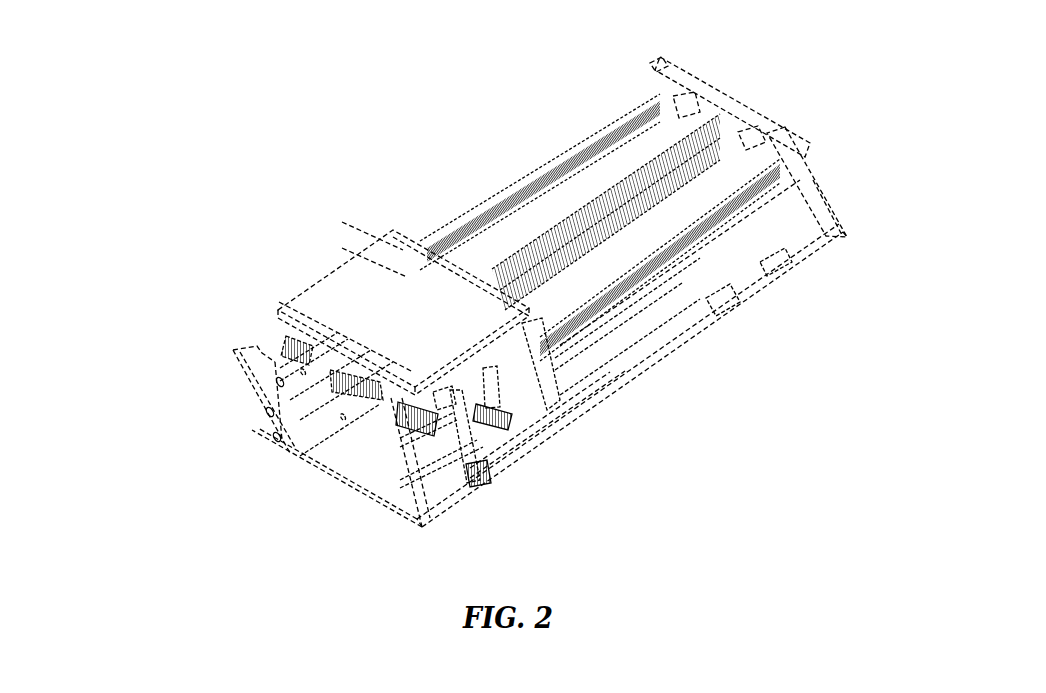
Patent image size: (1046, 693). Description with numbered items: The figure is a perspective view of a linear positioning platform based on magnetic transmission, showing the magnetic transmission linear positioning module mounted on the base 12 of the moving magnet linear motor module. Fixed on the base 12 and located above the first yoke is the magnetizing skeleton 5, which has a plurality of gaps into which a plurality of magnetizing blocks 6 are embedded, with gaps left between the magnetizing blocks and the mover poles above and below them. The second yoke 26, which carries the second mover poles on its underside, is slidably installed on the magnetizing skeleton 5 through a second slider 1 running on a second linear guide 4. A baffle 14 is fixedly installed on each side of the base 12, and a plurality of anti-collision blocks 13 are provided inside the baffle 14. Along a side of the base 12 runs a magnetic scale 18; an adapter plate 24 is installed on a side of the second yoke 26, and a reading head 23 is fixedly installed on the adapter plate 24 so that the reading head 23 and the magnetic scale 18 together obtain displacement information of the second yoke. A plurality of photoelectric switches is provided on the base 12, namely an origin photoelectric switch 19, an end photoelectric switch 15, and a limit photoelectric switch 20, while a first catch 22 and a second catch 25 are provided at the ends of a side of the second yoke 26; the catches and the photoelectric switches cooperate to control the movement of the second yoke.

The second slider 1 is at (237, 348).
The second linear guide 4 is at (765, 177).
The magnetizing skeleton 5 is at (492, 244).
The magnetizing blocks 6 is at (498, 270).
The base 12 is at (638, 333).
The anti-collision blocks 13 is at (757, 140).
The baffle 14 is at (737, 115).
The end photoelectric switch 15 is at (480, 477).
The magnetic scale 18 is at (638, 313).
The origin photoelectric switch 19 is at (732, 302).
The limit photoelectric switch 20 is at (785, 258).
The first catch 22 is at (472, 457).
The reading head 23 is at (465, 393).
The adapter plate 24 is at (492, 378).
The second catch 25 is at (555, 397).
The second yoke 26 is at (405, 296).